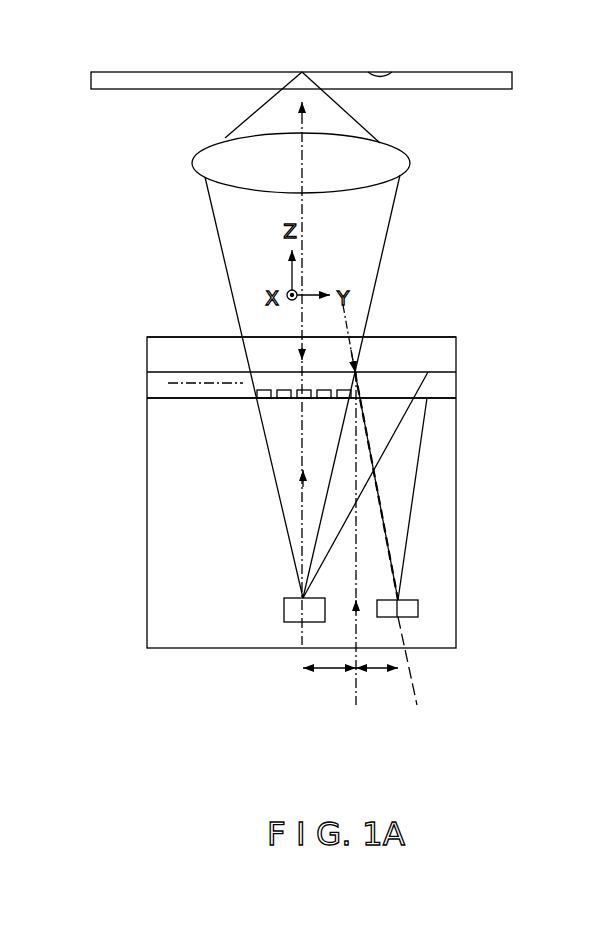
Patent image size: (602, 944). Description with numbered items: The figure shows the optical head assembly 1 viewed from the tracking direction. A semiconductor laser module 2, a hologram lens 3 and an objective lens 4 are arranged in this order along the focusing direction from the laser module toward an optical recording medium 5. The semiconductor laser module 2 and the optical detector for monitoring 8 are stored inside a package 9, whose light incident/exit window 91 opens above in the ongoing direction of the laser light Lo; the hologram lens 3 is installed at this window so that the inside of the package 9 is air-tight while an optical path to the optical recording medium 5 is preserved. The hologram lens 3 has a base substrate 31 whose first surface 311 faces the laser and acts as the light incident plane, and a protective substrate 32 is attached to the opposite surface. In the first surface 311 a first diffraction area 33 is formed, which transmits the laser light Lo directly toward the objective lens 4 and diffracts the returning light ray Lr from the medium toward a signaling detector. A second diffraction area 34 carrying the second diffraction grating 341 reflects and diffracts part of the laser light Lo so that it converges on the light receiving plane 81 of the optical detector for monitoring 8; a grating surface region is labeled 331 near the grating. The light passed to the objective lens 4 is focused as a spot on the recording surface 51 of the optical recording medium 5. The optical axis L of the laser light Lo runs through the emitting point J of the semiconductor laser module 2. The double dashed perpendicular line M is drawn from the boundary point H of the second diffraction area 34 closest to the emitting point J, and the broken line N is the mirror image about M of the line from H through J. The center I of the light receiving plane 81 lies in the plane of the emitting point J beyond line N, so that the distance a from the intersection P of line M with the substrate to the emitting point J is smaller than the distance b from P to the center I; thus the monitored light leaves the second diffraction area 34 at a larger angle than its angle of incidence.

The optical head assembly 1 is at (445, 237).
The semiconductor laser module 2 is at (284, 615).
The hologram lens 3 is at (473, 337).
The objective lens 4 is at (375, 157).
The optical recording medium 5 is at (447, 78).
The recording surface 51 is at (393, 72).
The optical detector for monitoring 8 is at (418, 610).
The light receiving plane 81 is at (418, 600).
The package 9 is at (147, 515).
The light incident/exit window 91 is at (273, 403).
The base substrate 31 is at (157, 387).
The first surface 311 is at (190, 398).
The protective substrate 32 is at (157, 355).
The first diffraction area 33 is at (285, 385).
The grating surface 331 is at (323, 399).
The second diffraction area 34 is at (192, 372).
The second diffraction grating 341 is at (427, 372).
The boundary point H is at (357, 370).
The optical axis L is at (302, 410).
The laser light Lo is at (302, 487).
The returning light ray Lr is at (298, 330).
The center of the light receiving plane I is at (405, 593).
The emitting point J is at (297, 597).
The intersection P is at (364, 595).
The perpendicular line M is at (355, 705).
The symmetric line N is at (410, 685).
The distance from the intersection P to the emitting point J a is at (329, 684).
The distance from the center I to the intersection P b is at (377, 684).